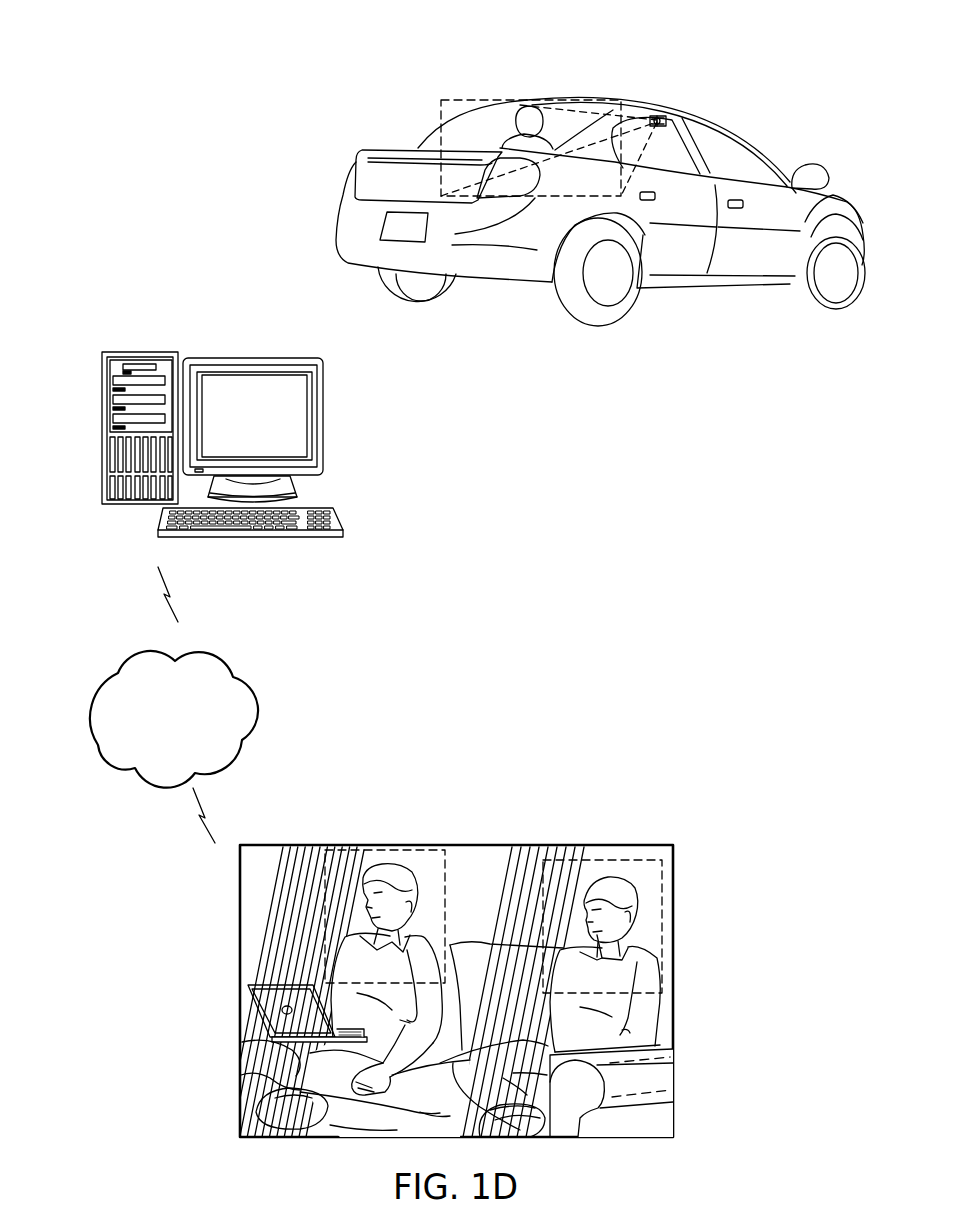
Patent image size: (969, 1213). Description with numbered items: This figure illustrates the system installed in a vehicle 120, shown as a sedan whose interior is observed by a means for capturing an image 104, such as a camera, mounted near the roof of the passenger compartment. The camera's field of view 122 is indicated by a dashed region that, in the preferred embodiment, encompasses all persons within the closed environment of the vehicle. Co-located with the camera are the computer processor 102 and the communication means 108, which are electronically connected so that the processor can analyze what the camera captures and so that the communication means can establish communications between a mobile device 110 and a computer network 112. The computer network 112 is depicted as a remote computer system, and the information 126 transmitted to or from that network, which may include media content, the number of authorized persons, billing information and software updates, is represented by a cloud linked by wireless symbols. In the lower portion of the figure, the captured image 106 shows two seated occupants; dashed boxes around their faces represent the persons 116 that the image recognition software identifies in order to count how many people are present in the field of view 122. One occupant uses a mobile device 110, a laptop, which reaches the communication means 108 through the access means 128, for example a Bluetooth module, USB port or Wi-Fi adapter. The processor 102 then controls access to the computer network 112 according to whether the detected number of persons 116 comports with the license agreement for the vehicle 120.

The computer processor 102 is at (665, 120).
The means for capturing an image 104 is at (656, 118).
The image 106 is at (472, 937).
The communication means 108 is at (658, 116).
The mobile device 110 is at (253, 1012).
The computer network 112 is at (375, 352).
The persons 116 is at (422, 845).
The vehicle 120 is at (750, 293).
The field of view 122 is at (437, 87).
The information 126 is at (192, 738).
The access means 128 is at (240, 1073).